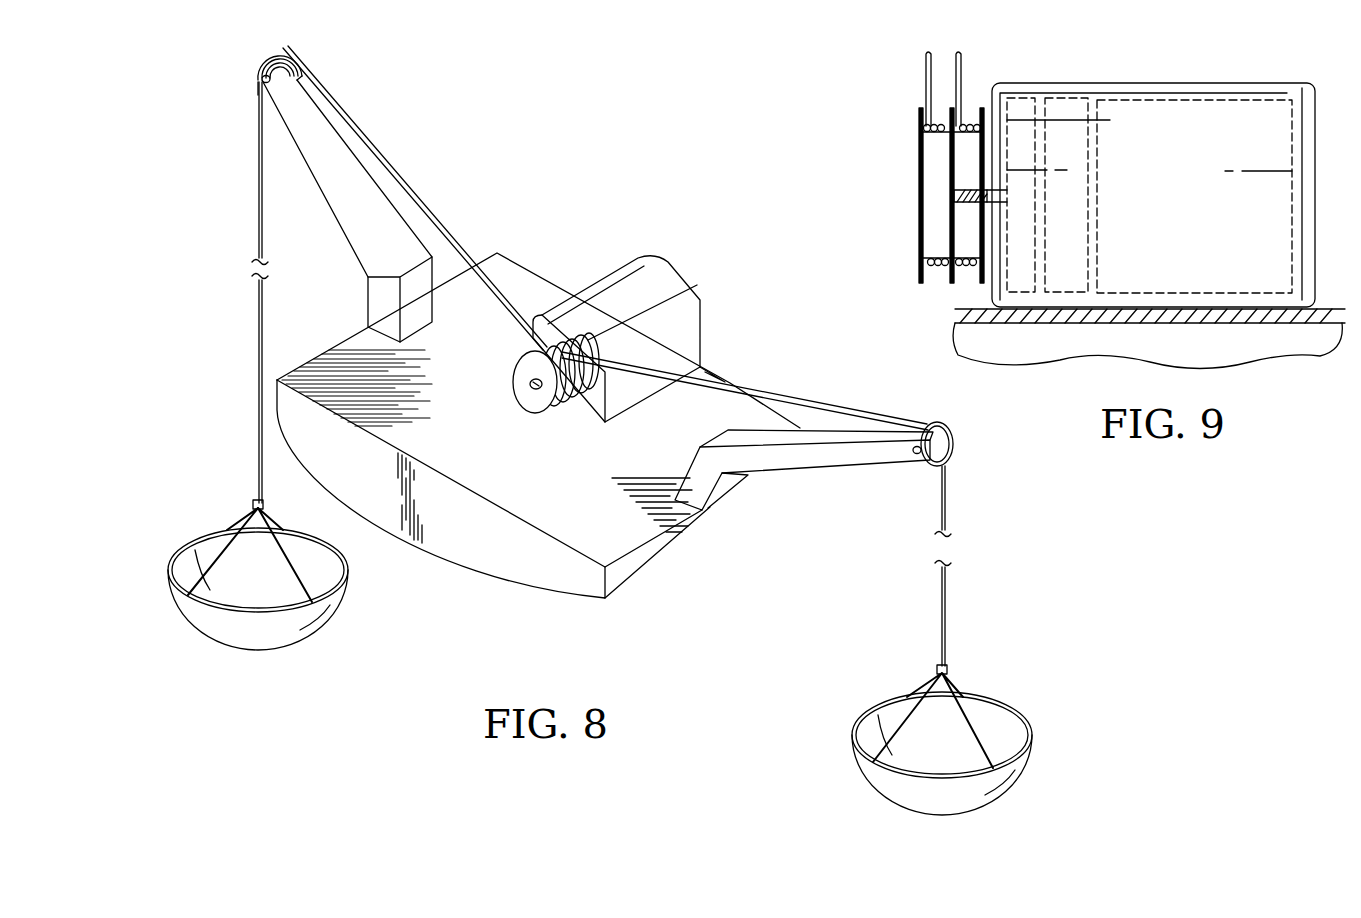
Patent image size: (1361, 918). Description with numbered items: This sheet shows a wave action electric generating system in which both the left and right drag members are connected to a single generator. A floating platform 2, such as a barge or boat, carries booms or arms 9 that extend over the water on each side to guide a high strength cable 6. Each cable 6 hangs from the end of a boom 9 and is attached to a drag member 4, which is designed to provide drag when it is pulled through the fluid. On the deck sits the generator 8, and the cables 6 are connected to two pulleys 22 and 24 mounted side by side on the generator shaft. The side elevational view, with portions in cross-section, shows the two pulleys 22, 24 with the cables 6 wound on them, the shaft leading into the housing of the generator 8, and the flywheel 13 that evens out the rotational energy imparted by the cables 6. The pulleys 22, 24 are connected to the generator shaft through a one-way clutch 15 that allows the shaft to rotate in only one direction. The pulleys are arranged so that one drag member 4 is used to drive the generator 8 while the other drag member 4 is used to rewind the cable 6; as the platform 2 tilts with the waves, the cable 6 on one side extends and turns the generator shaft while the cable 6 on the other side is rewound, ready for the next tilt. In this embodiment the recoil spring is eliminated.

In FIG. 8, the floating platform 2 is at (668, 545).
In FIG. 9, the floating platform 2 is at (1298, 358).
In FIG. 8, the drag member 4 is at (343, 602).
In FIG. 8, the cable 6 is at (256, 345).
In FIG. 9, the cable 6 is at (925, 80).
In FIG. 8, the generator 8 is at (668, 263).
In FIG. 9, the generator 8 is at (1218, 84).
In FIG. 8, the boom 9 is at (333, 206).
In FIG. 9, the flywheel 13 is at (1070, 297).
In FIG. 9, the one-way clutch 15 is at (1028, 98).
In FIG. 8, the pulley 22 is at (583, 402).
In FIG. 9, the pulley 22 is at (984, 153).
In FIG. 8, the pulley 24 is at (524, 396).
In FIG. 9, the pulley 24 is at (918, 206).